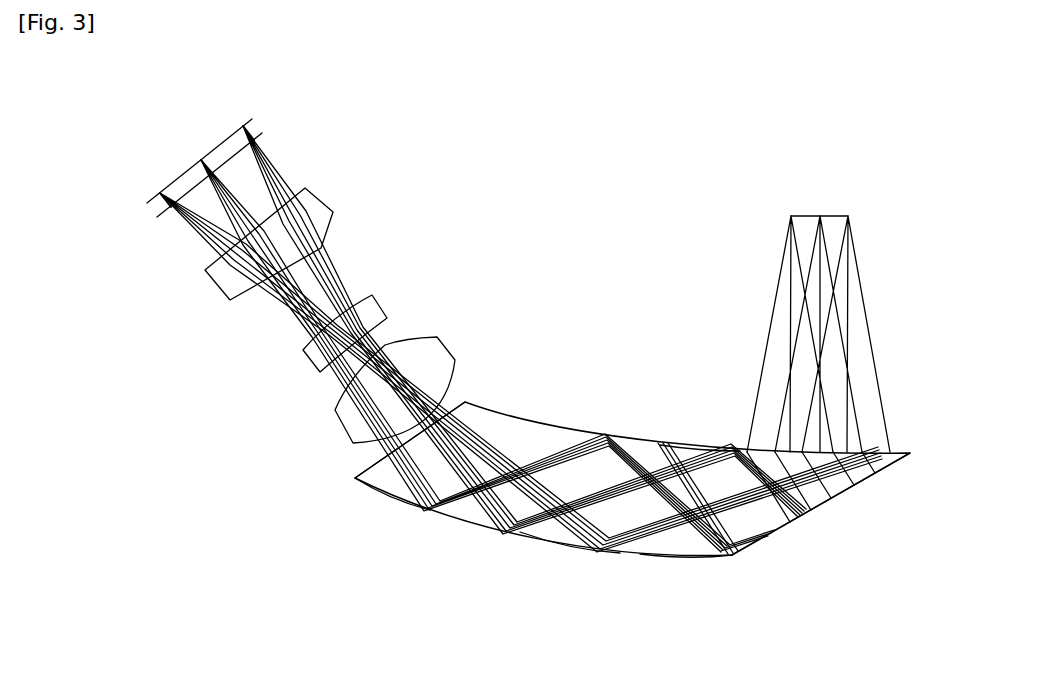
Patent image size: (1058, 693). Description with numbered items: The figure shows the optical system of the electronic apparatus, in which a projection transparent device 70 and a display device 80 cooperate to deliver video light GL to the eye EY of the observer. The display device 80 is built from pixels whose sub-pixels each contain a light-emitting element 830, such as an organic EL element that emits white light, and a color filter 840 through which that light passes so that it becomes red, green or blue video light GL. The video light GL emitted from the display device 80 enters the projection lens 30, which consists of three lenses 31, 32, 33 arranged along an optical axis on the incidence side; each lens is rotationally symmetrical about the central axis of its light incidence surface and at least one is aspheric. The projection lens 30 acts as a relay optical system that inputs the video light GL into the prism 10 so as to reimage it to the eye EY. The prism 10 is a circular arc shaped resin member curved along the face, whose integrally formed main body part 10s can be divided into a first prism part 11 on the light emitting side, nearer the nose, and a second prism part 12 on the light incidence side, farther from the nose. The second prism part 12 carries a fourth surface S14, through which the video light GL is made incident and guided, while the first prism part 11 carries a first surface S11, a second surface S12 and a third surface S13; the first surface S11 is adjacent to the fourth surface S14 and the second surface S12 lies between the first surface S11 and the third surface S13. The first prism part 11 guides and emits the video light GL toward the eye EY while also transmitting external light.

The display device 80 is at (272, 143).
The light-emitting element 830 is at (249, 122).
The color filter 840 is at (258, 133).
The projection lens 30 is at (319, 306).
The lens 31 is at (347, 427).
The lens 32 is at (317, 360).
The lens 33 is at (228, 281).
The projection transparent device 70 is at (547, 242).
The prism 10 is at (588, 367).
The main body part 10s is at (543, 440).
The first prism part 11 is at (692, 557).
The second prism part 12 is at (385, 483).
The first surface S11 is at (692, 443).
The second surface S12 is at (764, 541).
The third surface S13 is at (568, 547).
The fourth surface S14 is at (360, 474).
The eye EY is at (791, 216).
The video light GL is at (848, 340).